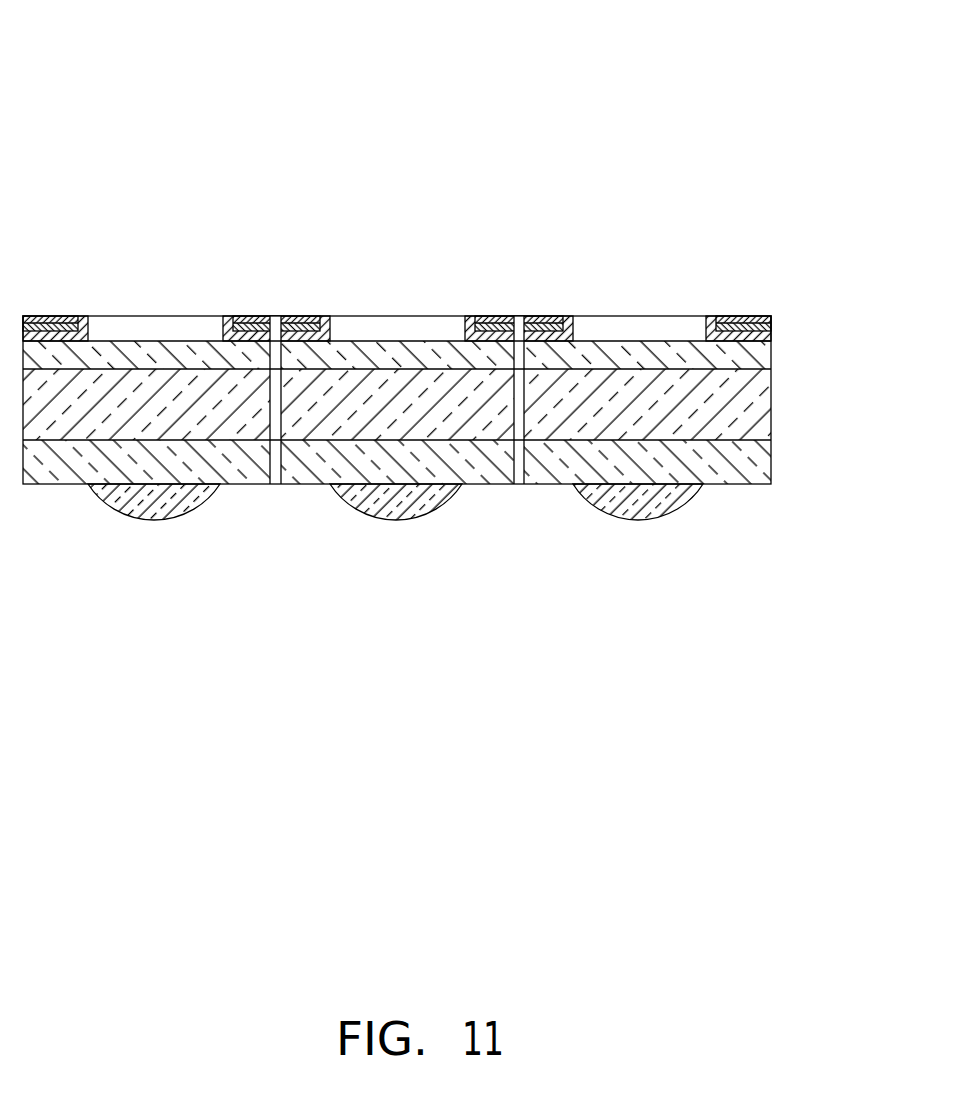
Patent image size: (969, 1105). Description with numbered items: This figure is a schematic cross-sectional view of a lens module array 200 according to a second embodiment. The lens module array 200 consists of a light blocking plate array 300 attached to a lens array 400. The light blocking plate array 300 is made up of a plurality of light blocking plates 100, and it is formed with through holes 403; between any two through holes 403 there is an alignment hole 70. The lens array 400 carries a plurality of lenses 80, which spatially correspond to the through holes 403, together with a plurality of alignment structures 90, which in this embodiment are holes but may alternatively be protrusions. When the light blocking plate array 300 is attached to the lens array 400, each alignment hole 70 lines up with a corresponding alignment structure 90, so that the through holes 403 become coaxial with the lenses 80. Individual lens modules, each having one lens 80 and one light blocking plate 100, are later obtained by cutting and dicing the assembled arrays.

The lens module array 200 is at (200, 78).
The light blocking plate array 300 is at (663, 222).
The lens array 400 is at (748, 463).
The through hole 403 is at (388, 317).
The light blocking plate 100 is at (438, 388).
The alignment hole 70 is at (275, 316).
The alignment structure 90 is at (522, 477).
The lens 80 is at (170, 500).